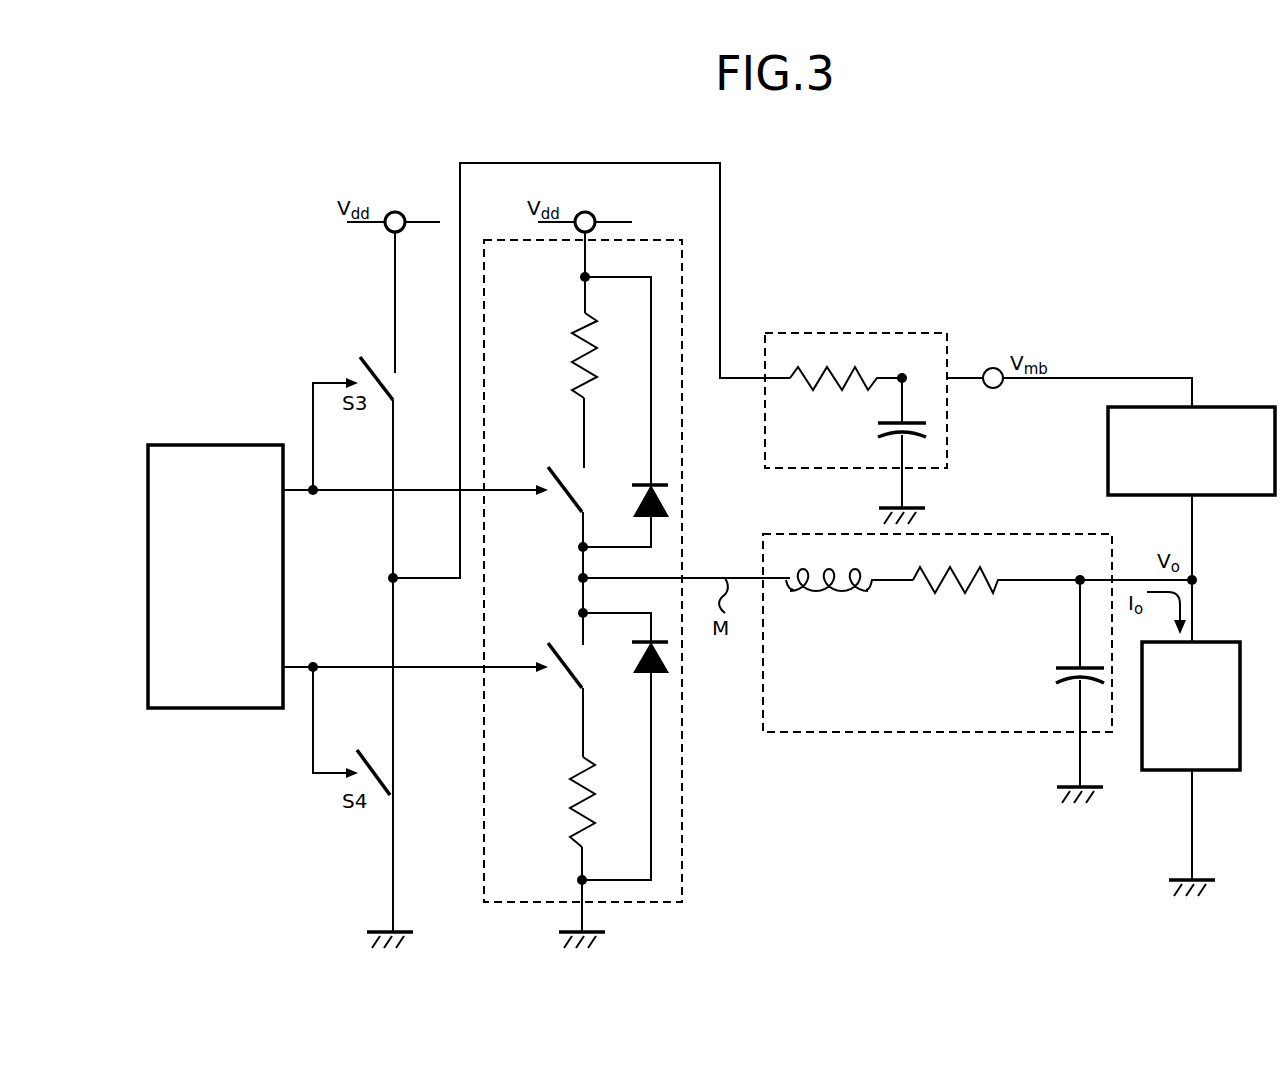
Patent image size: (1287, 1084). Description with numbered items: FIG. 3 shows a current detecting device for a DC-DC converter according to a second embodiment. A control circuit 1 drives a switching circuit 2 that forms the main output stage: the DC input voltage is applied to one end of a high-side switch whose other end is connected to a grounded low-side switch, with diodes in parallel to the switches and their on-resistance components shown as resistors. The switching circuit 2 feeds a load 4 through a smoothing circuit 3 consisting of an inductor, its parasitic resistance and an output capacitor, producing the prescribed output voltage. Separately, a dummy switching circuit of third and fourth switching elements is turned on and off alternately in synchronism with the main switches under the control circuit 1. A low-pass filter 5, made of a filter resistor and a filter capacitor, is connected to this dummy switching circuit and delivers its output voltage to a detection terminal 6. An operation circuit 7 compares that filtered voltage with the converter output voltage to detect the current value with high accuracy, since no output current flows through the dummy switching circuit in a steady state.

The control circuit 1 is at (211, 445).
The switching circuit 2 is at (683, 502).
The smoothing circuit 3 is at (848, 733).
The load 4 is at (1219, 642).
The low-pass filter 5 is at (858, 333).
The detection terminal 6 is at (993, 368).
The operation circuit 7 is at (1228, 407).